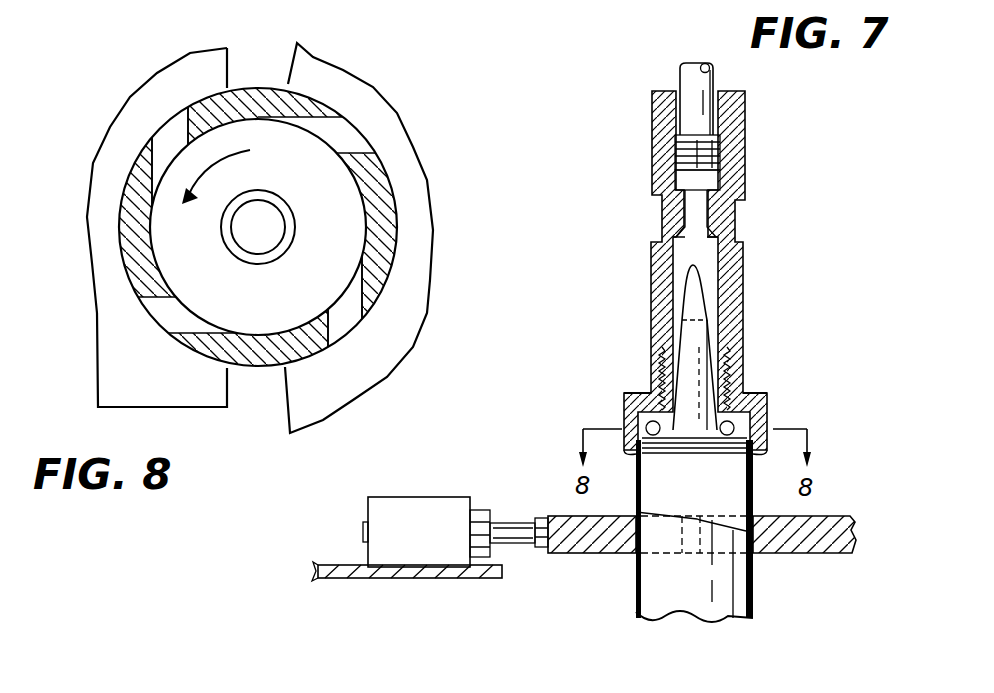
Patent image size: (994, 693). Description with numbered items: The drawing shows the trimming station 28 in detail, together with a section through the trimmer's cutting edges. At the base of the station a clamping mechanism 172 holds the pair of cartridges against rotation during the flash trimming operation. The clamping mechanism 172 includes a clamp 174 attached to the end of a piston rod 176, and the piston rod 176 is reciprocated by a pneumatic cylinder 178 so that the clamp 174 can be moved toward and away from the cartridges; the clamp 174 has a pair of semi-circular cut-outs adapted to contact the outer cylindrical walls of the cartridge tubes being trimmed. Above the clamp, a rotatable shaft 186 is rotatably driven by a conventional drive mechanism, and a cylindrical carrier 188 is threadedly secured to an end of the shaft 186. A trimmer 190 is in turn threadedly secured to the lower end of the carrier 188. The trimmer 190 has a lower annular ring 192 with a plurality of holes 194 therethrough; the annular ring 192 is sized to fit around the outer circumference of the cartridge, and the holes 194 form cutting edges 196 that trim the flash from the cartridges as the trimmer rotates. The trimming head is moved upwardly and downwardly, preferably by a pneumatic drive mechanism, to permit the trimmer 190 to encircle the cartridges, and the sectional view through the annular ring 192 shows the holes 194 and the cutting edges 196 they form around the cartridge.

In FIG. 7, the trimming station 28 is at (802, 167).
In FIG. 7, the clamping mechanism 172 is at (550, 584).
In FIG. 7, the clamp 174 is at (566, 516).
In FIG. 7, the piston rod 176 is at (510, 525).
In FIG. 7, the pneumatic cylinder 178 is at (398, 503).
In FIG. 7, the rotatable shaft 186 is at (683, 80).
In FIG. 7, the cylindrical carrier 188 is at (660, 150).
In FIG. 7, the trimmer 190 is at (640, 395).
In FIG. 8, the annular ring 192 is at (397, 230).
In FIG. 7, the annular ring 192 is at (766, 407).
In FIG. 8, the holes 194 is at (357, 137).
In FIG. 7, the holes 194 is at (730, 435).
In FIG. 8, the cutting edges 196 is at (373, 154).